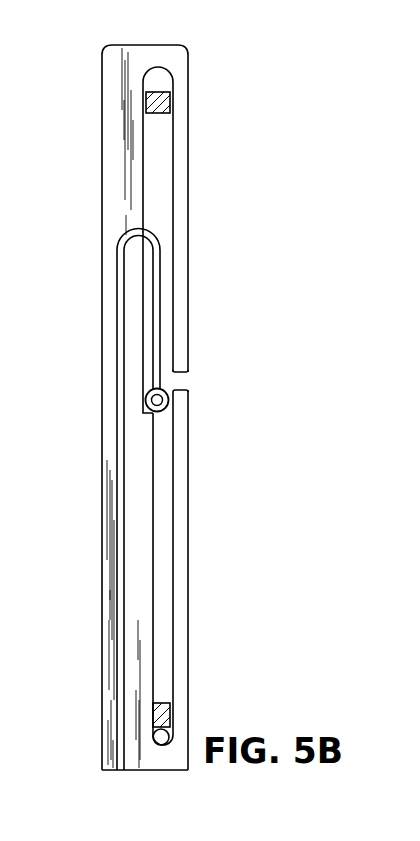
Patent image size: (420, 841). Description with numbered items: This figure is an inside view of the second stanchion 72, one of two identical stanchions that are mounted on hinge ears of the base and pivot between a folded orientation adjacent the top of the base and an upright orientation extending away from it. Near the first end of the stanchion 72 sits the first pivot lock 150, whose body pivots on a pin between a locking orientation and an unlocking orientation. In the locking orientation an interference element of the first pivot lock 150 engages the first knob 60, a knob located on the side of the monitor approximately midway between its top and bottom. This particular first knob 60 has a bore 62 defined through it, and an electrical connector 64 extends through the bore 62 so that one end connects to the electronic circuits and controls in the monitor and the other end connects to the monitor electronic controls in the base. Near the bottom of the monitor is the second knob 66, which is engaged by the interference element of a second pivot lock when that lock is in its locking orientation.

The second stanchion 72 is at (108, 47).
The first pivot lock 150 is at (145, 93).
The first knob 60 is at (147, 394).
The bore 62 is at (144, 402).
The electrical connector 64 is at (118, 605).
The second knob 66 is at (168, 725).